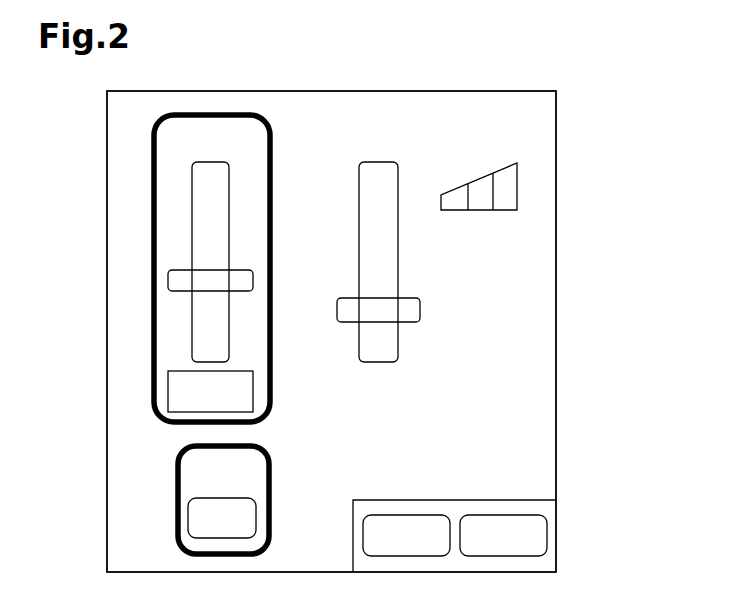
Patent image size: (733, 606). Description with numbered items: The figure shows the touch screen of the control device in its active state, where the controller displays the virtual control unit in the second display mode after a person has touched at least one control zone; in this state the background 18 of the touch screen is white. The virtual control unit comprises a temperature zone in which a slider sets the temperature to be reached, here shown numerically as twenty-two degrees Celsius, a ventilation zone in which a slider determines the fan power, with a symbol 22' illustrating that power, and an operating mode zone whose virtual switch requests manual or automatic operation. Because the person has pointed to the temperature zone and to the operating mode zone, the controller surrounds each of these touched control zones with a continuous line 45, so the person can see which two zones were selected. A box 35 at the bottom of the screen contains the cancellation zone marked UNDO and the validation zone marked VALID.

The background 18 is at (502, 349).
The symbol 22' is at (537, 190).
The continuous line 45 is at (151, 208).
The box 35 is at (515, 492).